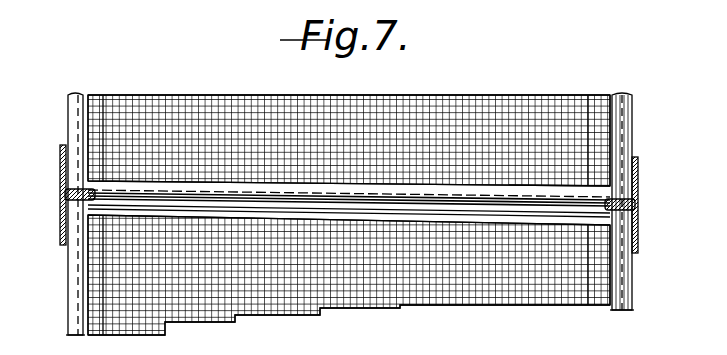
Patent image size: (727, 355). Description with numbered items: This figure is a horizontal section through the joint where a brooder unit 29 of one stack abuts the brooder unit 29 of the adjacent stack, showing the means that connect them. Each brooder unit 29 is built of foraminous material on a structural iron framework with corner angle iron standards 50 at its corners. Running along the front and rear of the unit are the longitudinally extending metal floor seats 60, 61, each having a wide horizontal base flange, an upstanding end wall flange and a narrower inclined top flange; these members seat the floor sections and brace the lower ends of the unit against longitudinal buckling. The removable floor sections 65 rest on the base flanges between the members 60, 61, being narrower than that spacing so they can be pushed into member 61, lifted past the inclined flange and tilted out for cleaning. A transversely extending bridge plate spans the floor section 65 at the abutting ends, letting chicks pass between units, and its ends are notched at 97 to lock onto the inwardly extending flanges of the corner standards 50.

The floor section 65 is at (424, 116).
The brooder unit 29 is at (500, 122).
The longitudinally extending metal floor seat 60 is at (68, 303).
The longitudinally extending metal floor seat 61 is at (622, 312).
The corner angle iron standard 50 is at (57, 213).
The notch 97 is at (85, 185).